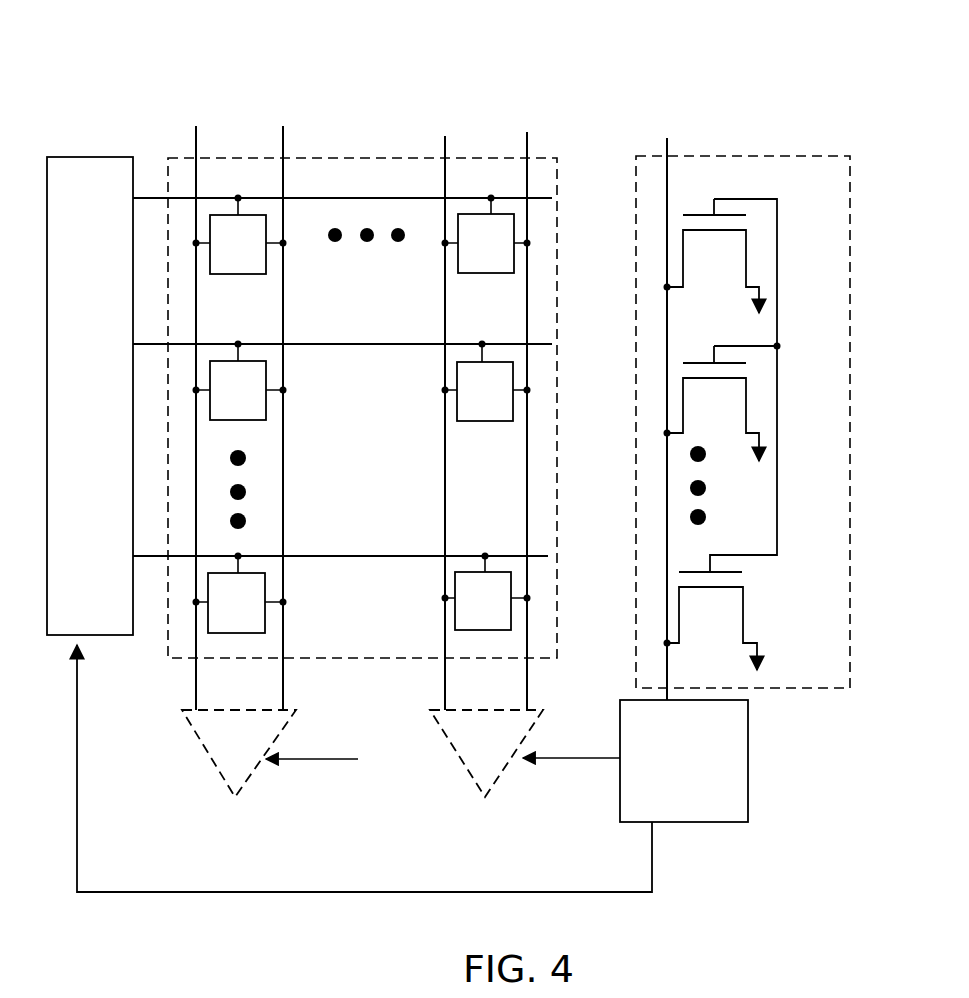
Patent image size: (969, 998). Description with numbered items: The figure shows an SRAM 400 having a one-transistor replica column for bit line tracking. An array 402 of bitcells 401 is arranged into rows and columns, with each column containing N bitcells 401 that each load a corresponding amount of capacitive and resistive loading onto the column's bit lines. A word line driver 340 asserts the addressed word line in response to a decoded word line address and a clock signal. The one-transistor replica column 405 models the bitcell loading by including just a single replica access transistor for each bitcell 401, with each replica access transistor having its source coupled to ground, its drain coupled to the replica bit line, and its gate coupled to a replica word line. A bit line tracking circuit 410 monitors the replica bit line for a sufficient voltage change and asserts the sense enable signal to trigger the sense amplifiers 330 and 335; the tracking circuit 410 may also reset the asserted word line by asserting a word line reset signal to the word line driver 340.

The SRAM 400 is at (146, 73).
The bitcell 401 is at (268, 250).
The array 402 is at (345, 424).
The 1T replica column 405 is at (785, 692).
The bit line tracking circuit 410 is at (717, 823).
The sense amplifier 330 is at (218, 765).
The sense amplifier 335 is at (465, 768).
The word line driver 340 is at (107, 640).